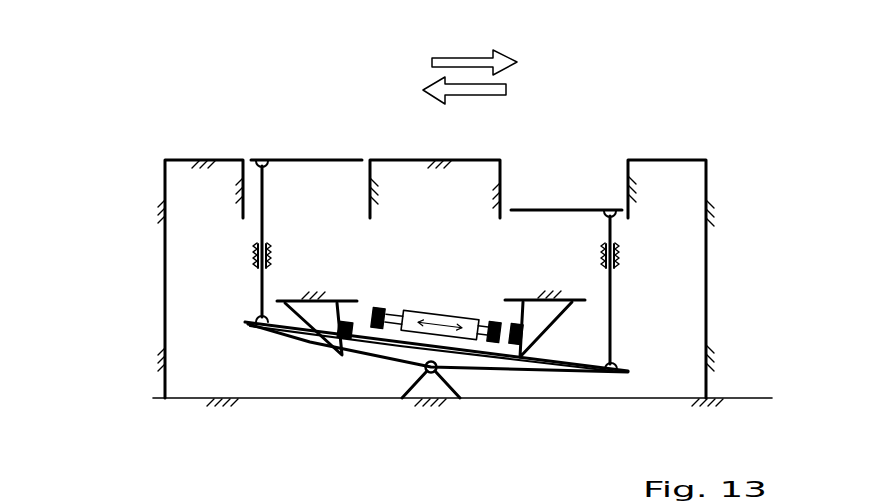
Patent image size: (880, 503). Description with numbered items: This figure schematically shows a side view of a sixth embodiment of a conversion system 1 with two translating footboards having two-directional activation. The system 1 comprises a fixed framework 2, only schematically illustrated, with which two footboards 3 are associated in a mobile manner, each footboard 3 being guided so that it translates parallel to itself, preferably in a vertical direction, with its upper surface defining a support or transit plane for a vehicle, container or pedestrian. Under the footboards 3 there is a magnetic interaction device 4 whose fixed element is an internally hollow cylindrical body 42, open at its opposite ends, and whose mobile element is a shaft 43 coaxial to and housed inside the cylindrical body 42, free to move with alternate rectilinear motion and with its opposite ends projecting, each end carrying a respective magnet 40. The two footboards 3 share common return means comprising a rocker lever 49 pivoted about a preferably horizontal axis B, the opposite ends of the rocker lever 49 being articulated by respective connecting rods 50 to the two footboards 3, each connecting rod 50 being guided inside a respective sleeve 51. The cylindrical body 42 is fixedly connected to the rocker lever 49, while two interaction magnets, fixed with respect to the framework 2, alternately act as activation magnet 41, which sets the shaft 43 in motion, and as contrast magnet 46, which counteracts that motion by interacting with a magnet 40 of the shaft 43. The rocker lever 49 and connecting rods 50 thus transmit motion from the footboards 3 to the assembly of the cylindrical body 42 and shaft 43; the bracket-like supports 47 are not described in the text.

The system 1 is at (735, 144).
The fixed framework 2 is at (708, 268).
The footboard 3 is at (295, 153).
The magnetic interaction device 4 is at (425, 282).
The magnet 40 is at (382, 309).
The activation magnet 41 is at (347, 348).
The cylindrical body 42 is at (432, 312).
The shaft 43 is at (391, 323).
The contrast magnet 46 is at (512, 323).
The bracket 47 is at (291, 331).
The rocker lever 49 is at (540, 371).
The connecting rod 50 is at (260, 290).
The sleeve 51 is at (256, 252).
The horizontal axis B is at (415, 395).